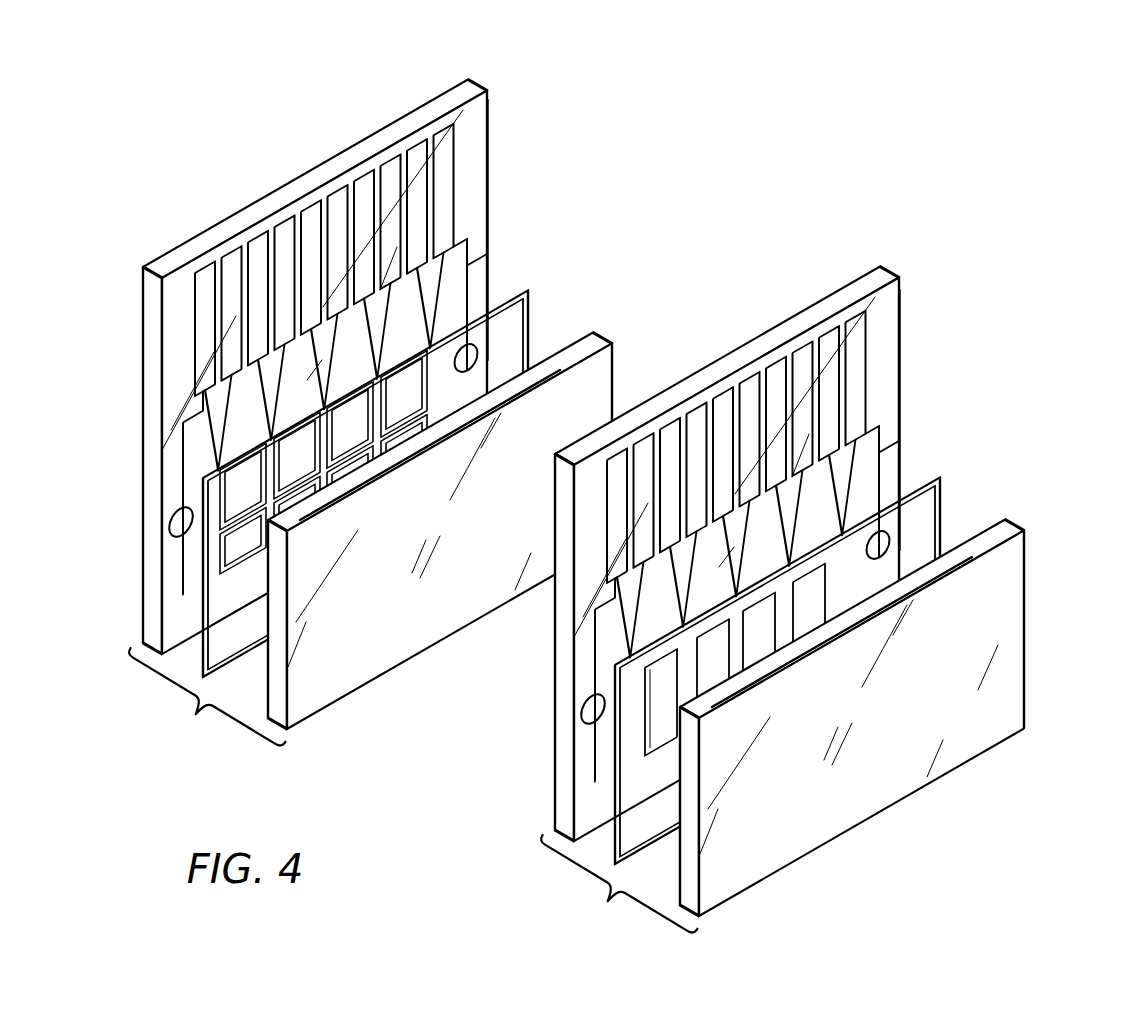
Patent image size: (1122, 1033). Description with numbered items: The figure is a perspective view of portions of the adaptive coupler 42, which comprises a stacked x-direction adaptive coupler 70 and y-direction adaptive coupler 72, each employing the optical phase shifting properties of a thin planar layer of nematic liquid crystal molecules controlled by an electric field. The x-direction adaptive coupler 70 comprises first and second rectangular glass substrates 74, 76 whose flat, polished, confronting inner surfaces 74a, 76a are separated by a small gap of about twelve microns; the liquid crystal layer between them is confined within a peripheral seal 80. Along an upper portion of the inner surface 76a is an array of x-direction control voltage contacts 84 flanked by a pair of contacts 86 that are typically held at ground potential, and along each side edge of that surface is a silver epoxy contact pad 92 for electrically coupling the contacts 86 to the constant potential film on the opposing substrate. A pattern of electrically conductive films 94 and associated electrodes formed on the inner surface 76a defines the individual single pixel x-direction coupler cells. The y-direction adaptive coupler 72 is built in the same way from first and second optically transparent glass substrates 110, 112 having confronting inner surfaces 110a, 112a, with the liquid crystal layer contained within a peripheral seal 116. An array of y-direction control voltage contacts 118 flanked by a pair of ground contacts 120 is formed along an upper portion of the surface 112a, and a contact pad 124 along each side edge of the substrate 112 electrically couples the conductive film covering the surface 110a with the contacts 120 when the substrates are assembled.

The adaptive coupler 42 is at (822, 194).
The x-direction adaptive coupler 70 is at (607, 903).
The y-direction adaptive coupler 72 is at (195, 716).
The first glass substrate 74 is at (1015, 530).
The inner surface 74a is at (993, 522).
The second glass substrate 76 is at (890, 273).
The inner surface 76a is at (890, 388).
The peripheral seal 80 is at (612, 784).
The x-direction control voltage contacts 84 is at (824, 330).
The contacts 86 is at (880, 338).
The contact pad 92 is at (890, 542).
The electrically conductive films 94 is at (662, 656).
The first glass substrate 110 is at (605, 342).
The inner surface 110a is at (582, 337).
The second glass substrate 112 is at (478, 83).
The inner surface 112a is at (478, 200).
The peripheral seal 116 is at (203, 596).
The y-direction control voltage contacts 118 is at (414, 140).
The contacts 120 is at (470, 148).
The contact pad 124 is at (479, 358).